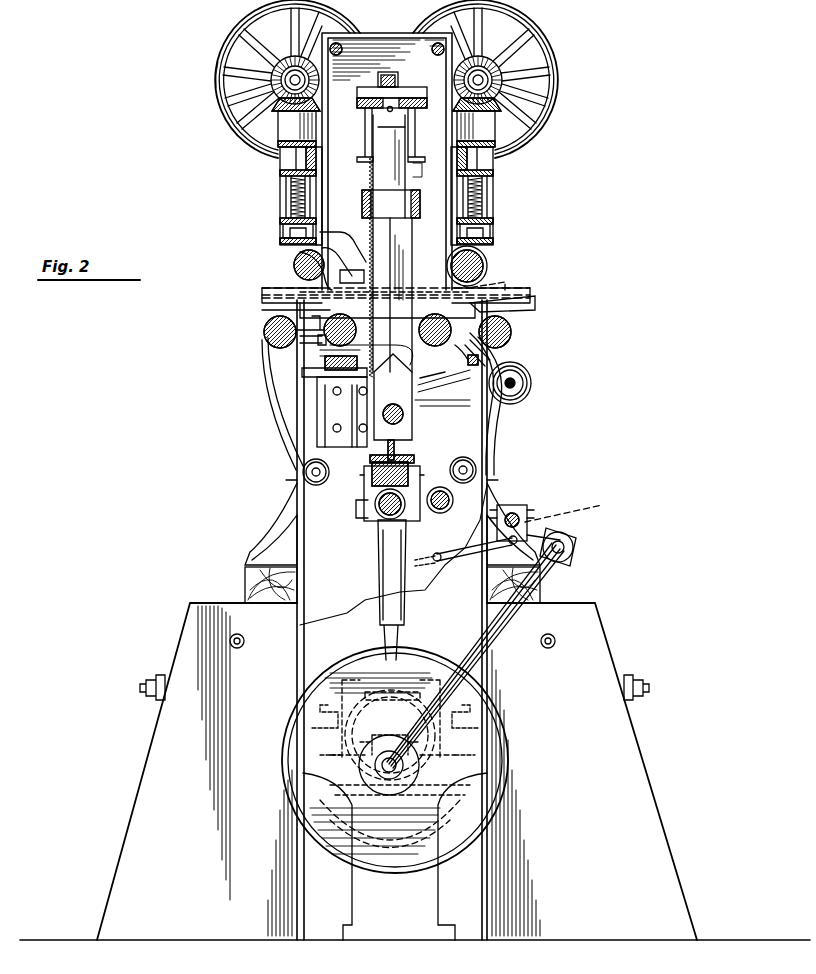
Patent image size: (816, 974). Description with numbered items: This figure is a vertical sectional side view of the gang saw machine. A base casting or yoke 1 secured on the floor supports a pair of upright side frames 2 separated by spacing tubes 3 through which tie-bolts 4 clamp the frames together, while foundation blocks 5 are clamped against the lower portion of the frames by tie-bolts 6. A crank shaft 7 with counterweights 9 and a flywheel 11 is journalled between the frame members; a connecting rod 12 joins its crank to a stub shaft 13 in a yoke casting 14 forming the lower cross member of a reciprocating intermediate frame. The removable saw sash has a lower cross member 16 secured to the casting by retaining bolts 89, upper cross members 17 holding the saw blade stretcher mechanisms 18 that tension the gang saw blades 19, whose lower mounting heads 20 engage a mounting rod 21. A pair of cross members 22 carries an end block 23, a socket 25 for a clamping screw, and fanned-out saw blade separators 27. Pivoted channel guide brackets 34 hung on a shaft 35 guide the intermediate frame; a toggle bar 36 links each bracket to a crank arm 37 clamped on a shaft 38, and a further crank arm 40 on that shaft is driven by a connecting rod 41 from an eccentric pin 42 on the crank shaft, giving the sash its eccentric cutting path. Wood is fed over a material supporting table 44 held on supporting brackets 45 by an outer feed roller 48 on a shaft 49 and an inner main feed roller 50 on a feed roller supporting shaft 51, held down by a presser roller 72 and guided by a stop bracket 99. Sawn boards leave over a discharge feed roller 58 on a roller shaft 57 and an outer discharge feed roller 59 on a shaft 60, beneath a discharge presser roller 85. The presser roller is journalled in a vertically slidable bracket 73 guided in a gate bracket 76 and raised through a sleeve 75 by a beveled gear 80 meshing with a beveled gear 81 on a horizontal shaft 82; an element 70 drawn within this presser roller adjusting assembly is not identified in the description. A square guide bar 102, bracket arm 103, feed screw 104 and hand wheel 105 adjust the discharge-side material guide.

The base casting or yoke 1 is at (365, 905).
The side frames 2 is at (530, 376).
The spacing tubes 3 is at (300, 488).
The tie-bolts 4 is at (303, 471).
The foundation blocks 5 is at (125, 866).
The tie-bolts 6 is at (237, 634).
The crank shaft 7 is at (400, 766).
The counterweights 9 is at (392, 826).
The flywheel 11 is at (457, 855).
The connecting rod 12 is at (390, 585).
The stub shaft 13 is at (378, 505).
The yoke casting 14 is at (372, 480).
The cross member 16 is at (408, 458).
The upper cross members 17 is at (380, 132).
The saw blade stretcher mechanisms 18 is at (392, 92).
The gang saw blades 19 is at (468, 362).
The mounting heads 20 is at (485, 380).
The mounting rod 21 is at (406, 416).
The cross members 22 is at (362, 200).
The block 23 is at (262, 295).
The socket 25 is at (340, 408).
The saw blade separators 27 is at (385, 235).
The channel guide brackets 34 is at (368, 522).
The shaft 35 is at (446, 500).
The toggle bar 36 is at (455, 572).
The crank arm 37 is at (572, 513).
The shaft 38 is at (530, 512).
The crank arm 40 is at (573, 530).
The connecting rod 41 is at (490, 640).
The eccentric pin 42 is at (378, 770).
The material supporting table 44 is at (385, 296).
The supporting brackets 45 is at (362, 356).
The outer feed roller 48 is at (268, 322).
The shaft 49 is at (262, 340).
The inner main feed roller 50 is at (330, 368).
The feed roller supporting shaft 51 is at (263, 366).
The roller shaft 57 is at (520, 300).
The discharge feed roller 58 is at (495, 294).
The outer discharge feed roller 59 is at (500, 320).
The shaft 60 is at (512, 333).
The spring 70 is at (290, 203).
The presser roller 72 is at (294, 270).
The vertically slidable bracket 73 is at (290, 237).
The sleeve 75 is at (285, 130).
The gate bracket 76 is at (280, 158).
The beveled gear 80 is at (276, 102).
The beveled gear 81 is at (292, 62).
The horizontal shaft 82 is at (274, 76).
The discharge presser roller 85 is at (485, 268).
The retaining bolts 89 is at (220, 92).
The stop bracket 99 is at (300, 263).
The square guide bar 102 is at (434, 378).
The bracket arm 103 is at (490, 405).
The feed screw 104 is at (512, 365).
The hand wheel 105 is at (528, 393).